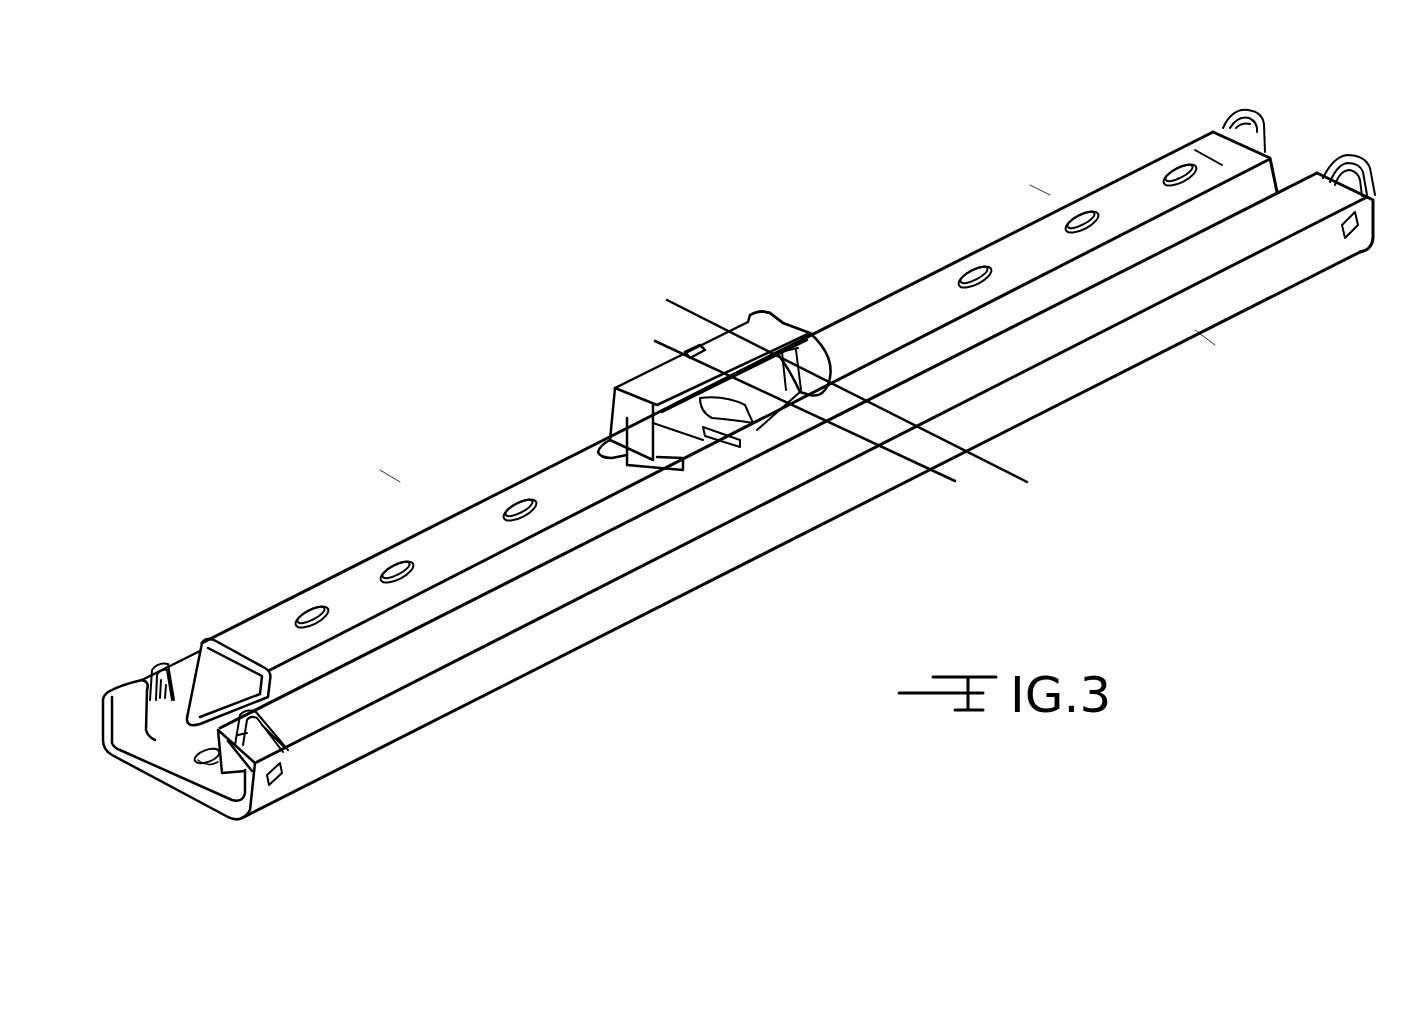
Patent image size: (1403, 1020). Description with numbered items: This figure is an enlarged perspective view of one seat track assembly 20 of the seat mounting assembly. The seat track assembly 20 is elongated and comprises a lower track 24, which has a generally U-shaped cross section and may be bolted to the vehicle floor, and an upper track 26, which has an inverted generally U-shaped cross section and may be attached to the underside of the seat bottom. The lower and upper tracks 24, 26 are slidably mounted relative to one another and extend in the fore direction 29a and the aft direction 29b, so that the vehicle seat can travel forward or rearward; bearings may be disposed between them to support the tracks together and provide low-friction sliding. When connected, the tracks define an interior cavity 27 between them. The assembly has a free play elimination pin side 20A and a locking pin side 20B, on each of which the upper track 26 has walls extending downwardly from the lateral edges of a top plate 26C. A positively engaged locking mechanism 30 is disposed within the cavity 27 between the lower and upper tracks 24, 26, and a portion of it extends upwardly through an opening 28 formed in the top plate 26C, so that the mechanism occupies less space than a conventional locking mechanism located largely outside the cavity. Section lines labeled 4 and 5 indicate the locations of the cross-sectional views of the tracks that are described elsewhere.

The seat track assembly 20 is at (400, 478).
The free play elimination pin side 20A is at (1208, 344).
The locking pin side 20B is at (1040, 190).
The lower track 24 is at (330, 753).
The upper track 26 is at (345, 598).
The top plate 26C is at (1212, 158).
The cavity 27 is at (230, 682).
The opening 28 is at (606, 438).
The fore direction 29a is at (545, 340).
The aft direction 29b is at (852, 195).
The positively engaged locking mechanism 30 is at (780, 318).
The section line 4- 4 is at (670, 301).
The section line 5- 5 is at (692, 329).